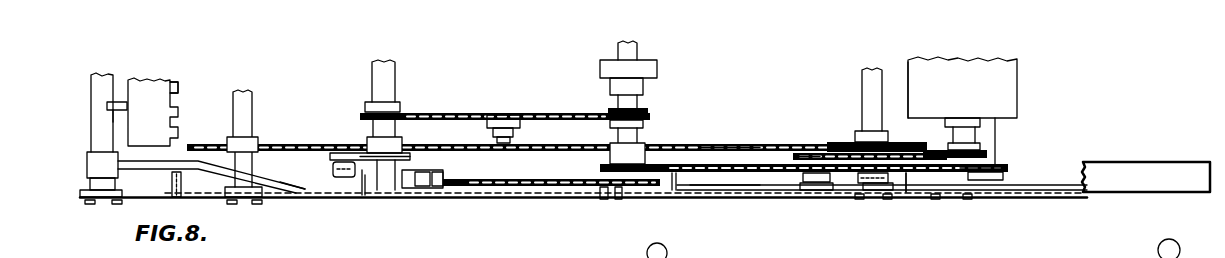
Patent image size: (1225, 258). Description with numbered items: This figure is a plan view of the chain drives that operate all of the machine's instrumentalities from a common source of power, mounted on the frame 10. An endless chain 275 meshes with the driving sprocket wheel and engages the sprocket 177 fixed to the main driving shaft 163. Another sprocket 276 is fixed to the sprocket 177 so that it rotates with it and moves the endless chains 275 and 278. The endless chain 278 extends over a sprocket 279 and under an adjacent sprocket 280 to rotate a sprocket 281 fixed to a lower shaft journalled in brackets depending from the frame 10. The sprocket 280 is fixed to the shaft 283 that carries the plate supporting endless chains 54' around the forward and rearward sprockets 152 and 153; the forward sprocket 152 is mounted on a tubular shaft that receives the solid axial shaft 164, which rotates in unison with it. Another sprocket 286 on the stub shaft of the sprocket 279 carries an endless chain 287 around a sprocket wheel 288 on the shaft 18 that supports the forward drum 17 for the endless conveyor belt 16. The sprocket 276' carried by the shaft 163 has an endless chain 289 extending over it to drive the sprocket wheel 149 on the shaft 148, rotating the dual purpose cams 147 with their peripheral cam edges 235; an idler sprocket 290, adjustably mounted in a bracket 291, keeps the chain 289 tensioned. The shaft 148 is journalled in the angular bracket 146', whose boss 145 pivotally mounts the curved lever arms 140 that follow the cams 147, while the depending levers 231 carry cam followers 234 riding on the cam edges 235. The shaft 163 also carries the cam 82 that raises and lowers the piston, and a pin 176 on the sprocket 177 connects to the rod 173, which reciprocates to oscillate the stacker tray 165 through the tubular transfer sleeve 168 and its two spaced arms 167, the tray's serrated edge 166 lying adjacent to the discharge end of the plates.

The frame 10 is at (1113, 173).
The endless conveyor belt 16 is at (907, 65).
The drum 17 is at (997, 82).
The shaft 18 is at (962, 133).
The endless chain 54' is at (730, 125).
The cam 82 is at (655, 70).
The curved lever arm 140 is at (420, 197).
The boss 145 is at (437, 187).
The angular bracket 146' is at (377, 200).
The cam 147 is at (360, 203).
The shaft 148 is at (388, 75).
The sprocket wheel 149 is at (395, 103).
The forward sprocket 152 is at (257, 143).
The rearward sprocket 153 is at (853, 137).
The main driving shaft 163 is at (633, 48).
The solid axial shaft 164 is at (247, 103).
The oscillating stacker tray 165 is at (147, 88).
The serrated edge 166 is at (182, 85).
The arm 167 is at (118, 101).
The tubular transfer sleeve 168 is at (107, 122).
The rod 173 is at (305, 197).
The pin 176 is at (603, 200).
The sprocket 177 is at (622, 200).
The depending lever 231 is at (345, 193).
The cam follower 234 is at (340, 158).
The peripheral cam edge 235 is at (412, 157).
The endless chain 275 is at (522, 188).
The sprocket 276 is at (607, 163).
The sprocket 276' is at (649, 103).
The endless chain 278 is at (718, 175).
The sprocket 279 is at (803, 182).
The sprocket 280 is at (870, 178).
The sprocket 281 is at (1008, 165).
The shaft 283 is at (867, 88).
The sprocket 286 is at (793, 152).
The endless chain 287 is at (900, 173).
The sprocket wheel 288 is at (985, 148).
The endless chain 289 is at (583, 108).
The idler sprocket 290 is at (507, 118).
The bracket 291 is at (518, 131).